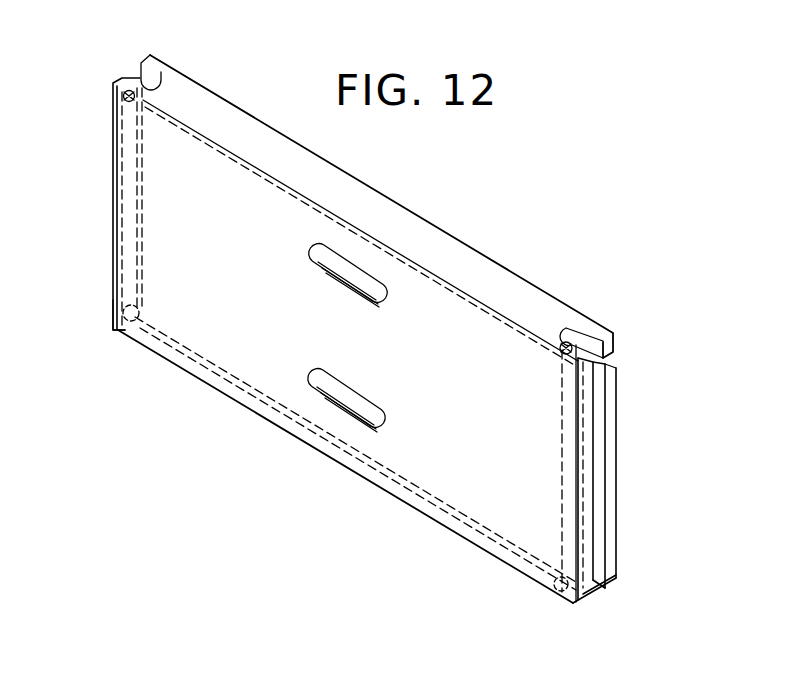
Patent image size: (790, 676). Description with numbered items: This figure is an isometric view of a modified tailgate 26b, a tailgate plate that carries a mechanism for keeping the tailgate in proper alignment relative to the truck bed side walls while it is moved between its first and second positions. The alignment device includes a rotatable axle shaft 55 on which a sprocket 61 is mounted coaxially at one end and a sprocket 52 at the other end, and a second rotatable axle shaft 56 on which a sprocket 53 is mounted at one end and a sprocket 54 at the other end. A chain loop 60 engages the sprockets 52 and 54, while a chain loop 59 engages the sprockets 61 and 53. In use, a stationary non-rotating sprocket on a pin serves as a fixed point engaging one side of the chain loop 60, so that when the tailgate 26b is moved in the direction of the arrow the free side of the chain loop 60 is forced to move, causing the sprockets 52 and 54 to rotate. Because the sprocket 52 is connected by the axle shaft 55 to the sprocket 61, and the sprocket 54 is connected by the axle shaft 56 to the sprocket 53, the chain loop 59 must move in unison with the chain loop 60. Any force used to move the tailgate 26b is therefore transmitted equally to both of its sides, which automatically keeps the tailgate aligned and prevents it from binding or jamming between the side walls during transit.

The modified tailgate 26b is at (219, 326).
The sprocket 52 is at (560, 345).
The sprocket 53 is at (124, 333).
The sprocket 54 is at (563, 589).
The rotatable axle shaft 55 is at (423, 268).
The rotatable axle shaft 56 is at (325, 437).
The chain loop 59 is at (113, 195).
The chain loop 60 is at (594, 480).
The sprocket 61 is at (131, 90).